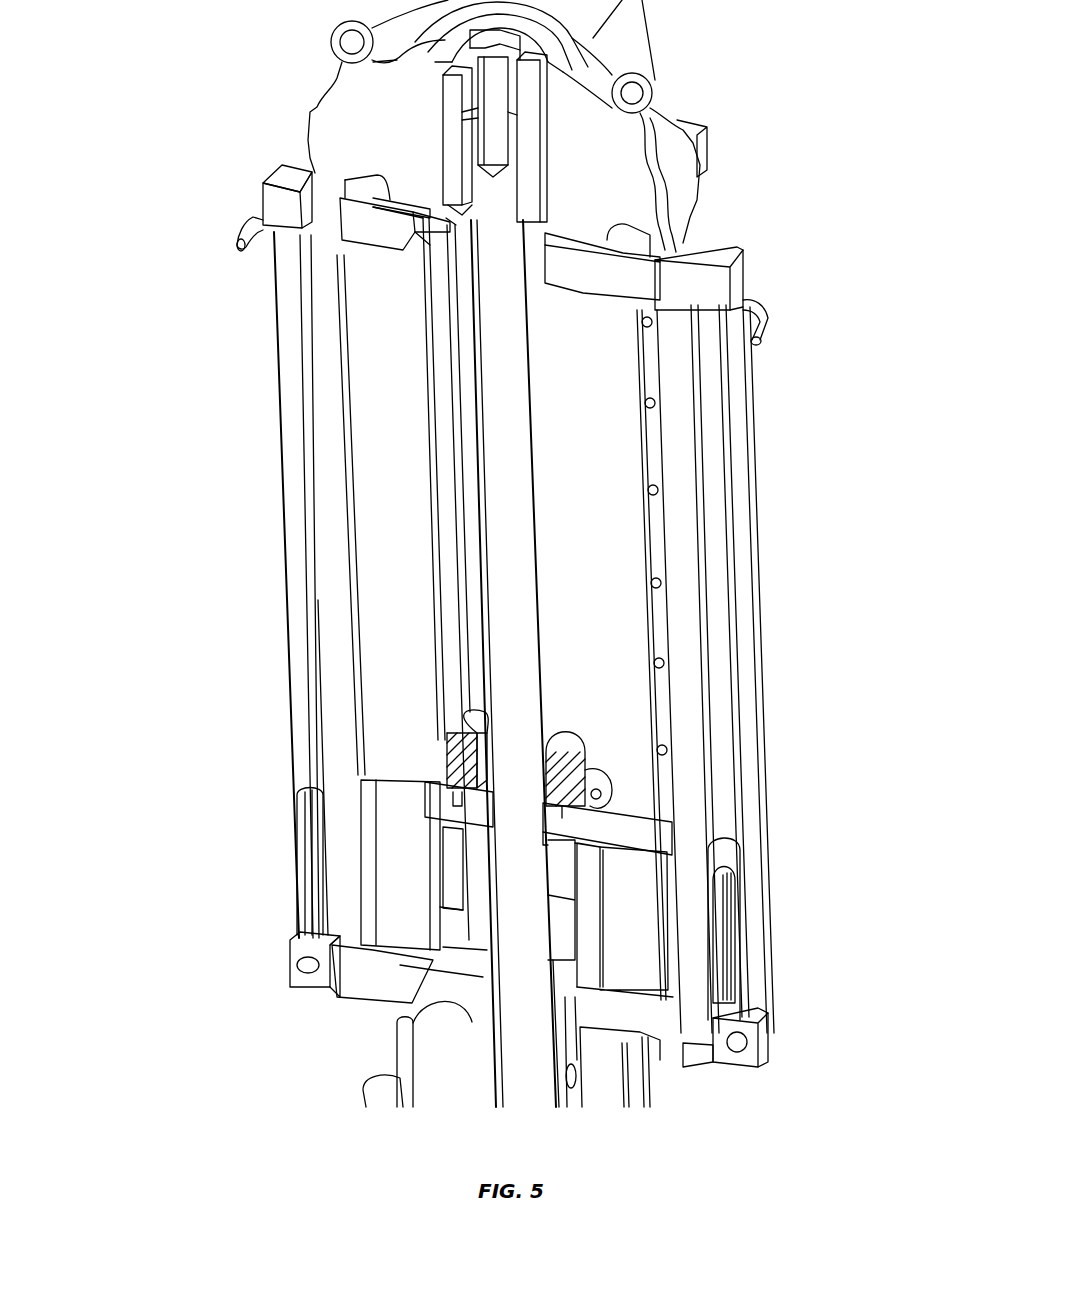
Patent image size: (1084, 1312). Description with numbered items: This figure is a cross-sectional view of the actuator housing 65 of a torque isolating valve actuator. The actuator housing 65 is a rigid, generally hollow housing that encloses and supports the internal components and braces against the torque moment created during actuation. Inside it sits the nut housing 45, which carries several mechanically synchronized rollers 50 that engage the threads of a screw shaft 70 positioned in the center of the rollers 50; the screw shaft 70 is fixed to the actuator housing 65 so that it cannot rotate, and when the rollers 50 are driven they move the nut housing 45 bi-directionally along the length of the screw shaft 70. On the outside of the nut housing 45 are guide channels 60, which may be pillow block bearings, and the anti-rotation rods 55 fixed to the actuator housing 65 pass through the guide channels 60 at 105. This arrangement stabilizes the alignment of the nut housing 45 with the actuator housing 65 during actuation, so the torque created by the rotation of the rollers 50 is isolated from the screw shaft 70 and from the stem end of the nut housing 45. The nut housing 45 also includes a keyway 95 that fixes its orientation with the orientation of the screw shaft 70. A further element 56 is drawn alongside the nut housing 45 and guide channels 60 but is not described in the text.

The nut housing 45 is at (455, 825).
The rollers 50 is at (447, 755).
The anti-rotation rods 55 is at (323, 380).
The lower block 56 is at (410, 830).
The guide channels 60 is at (477, 917).
The actuator housing 65 is at (280, 467).
The screw shaft 70 is at (528, 1055).
The keyway 95 is at (485, 993).
The pass-through of anti-rotation rods through the guide channels 105 is at (640, 838).